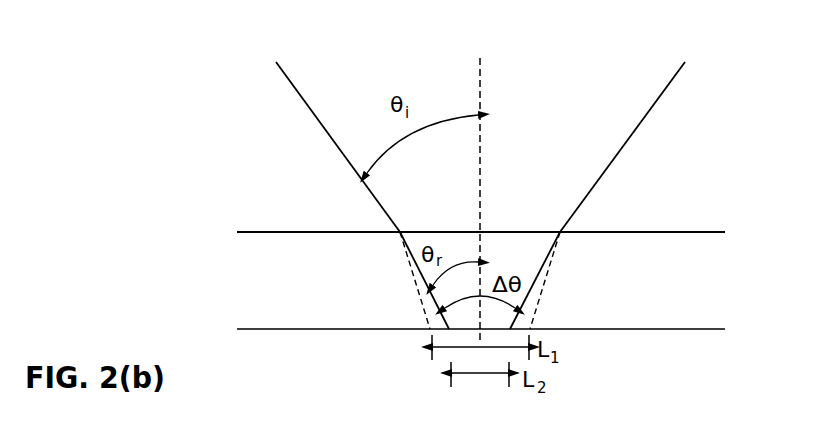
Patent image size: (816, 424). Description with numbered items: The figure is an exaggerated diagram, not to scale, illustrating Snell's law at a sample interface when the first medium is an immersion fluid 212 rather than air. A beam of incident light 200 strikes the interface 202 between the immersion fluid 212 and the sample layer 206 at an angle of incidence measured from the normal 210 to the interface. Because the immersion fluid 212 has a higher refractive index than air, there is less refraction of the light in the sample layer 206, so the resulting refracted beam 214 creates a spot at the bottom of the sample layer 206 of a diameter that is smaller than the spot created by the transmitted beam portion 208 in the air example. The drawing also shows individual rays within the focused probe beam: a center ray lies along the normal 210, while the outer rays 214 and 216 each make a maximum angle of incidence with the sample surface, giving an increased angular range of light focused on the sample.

The beam of incident light 200 is at (290, 106).
The interface 202 is at (218, 230).
The sample layer 206 is at (724, 298).
The transmitted beam 208 is at (427, 311).
The normal 210 is at (489, 47).
The immersion fluid 212 is at (723, 192).
The refracted beam 214 is at (422, 298).
The outer ray 216 is at (535, 308).